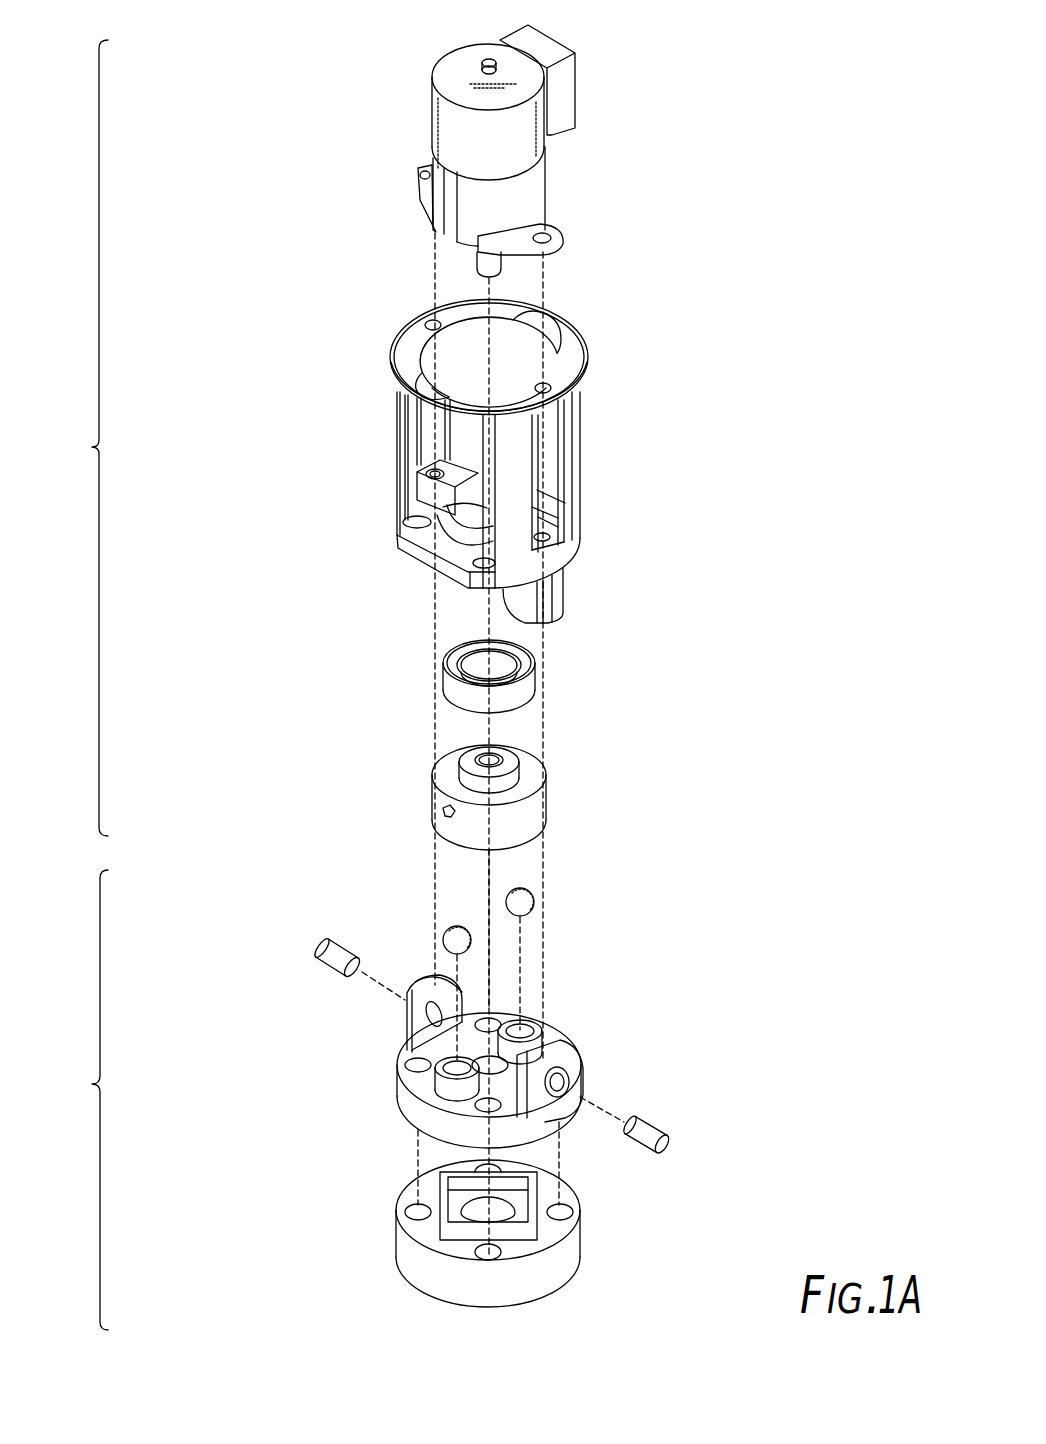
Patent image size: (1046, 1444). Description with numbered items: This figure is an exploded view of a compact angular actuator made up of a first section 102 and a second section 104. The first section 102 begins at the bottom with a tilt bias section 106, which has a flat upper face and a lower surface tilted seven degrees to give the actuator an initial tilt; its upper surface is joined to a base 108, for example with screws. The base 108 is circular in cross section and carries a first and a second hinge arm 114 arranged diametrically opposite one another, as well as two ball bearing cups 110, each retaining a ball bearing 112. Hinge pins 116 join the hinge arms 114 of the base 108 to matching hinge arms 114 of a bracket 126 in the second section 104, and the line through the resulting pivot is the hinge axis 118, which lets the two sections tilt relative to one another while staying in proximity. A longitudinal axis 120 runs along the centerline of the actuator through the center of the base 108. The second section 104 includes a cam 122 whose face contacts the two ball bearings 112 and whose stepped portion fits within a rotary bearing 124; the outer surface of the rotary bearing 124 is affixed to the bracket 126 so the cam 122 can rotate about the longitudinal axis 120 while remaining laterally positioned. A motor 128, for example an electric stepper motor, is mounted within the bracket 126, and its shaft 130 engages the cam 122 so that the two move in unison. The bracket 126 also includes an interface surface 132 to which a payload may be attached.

The first section 102 is at (92, 1084).
The second section 104 is at (92, 447).
The tilt bias section 106 is at (405, 1256).
The base 108 is at (405, 1108).
The ball bearing cups 110 is at (533, 1026).
The ball bearing 112 is at (530, 896).
The hinge arms 114 is at (558, 583).
The hinge pins 116 is at (318, 958).
The hinge axis 118 is at (608, 1112).
The longitudinal axis 120 is at (488, 878).
The cam 122 is at (447, 773).
The rotary bearing 124 is at (452, 692).
The bracket 126 is at (398, 436).
The motor 128 is at (447, 76).
The shaft 130 is at (478, 265).
The interface surface 132 is at (415, 343).